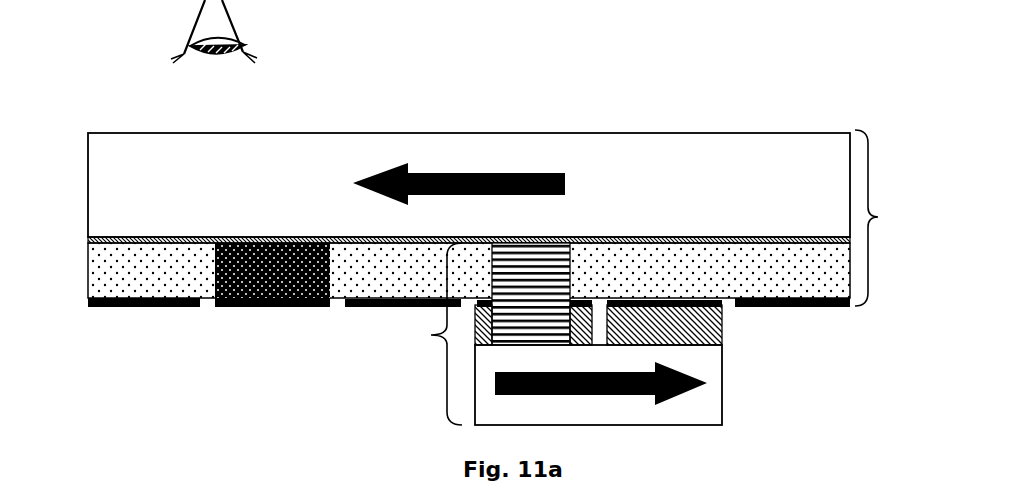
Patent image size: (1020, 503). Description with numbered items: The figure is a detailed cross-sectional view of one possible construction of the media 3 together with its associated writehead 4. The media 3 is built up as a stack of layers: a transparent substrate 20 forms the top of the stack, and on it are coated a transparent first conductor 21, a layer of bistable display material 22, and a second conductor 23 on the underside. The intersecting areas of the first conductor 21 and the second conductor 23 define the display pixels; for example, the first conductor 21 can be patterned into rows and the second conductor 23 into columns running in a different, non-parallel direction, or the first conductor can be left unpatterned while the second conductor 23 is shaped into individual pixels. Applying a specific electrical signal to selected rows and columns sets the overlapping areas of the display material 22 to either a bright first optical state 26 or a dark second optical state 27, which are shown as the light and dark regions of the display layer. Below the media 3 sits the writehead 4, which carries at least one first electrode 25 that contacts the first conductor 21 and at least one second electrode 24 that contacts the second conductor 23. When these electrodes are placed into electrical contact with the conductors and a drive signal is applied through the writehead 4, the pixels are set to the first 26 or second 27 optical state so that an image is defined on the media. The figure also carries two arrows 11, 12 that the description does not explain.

The media 3 is at (885, 218).
The writehead 4 is at (428, 334).
The scrolling direction arrow 11 is at (478, 172).
The moving body 12 is at (672, 398).
The transparent substrate 20 is at (756, 145).
The first conductor 21 is at (713, 238).
The bistable display material 22 is at (655, 270).
The second conductor 23 is at (797, 307).
The second electrode 24 is at (716, 333).
The first electrode 25 is at (535, 323).
The first optical state 26 is at (285, 300).
The second optical state 27 is at (148, 280).